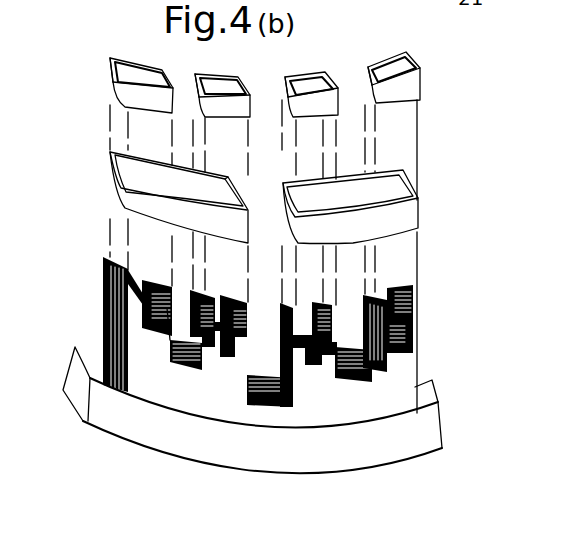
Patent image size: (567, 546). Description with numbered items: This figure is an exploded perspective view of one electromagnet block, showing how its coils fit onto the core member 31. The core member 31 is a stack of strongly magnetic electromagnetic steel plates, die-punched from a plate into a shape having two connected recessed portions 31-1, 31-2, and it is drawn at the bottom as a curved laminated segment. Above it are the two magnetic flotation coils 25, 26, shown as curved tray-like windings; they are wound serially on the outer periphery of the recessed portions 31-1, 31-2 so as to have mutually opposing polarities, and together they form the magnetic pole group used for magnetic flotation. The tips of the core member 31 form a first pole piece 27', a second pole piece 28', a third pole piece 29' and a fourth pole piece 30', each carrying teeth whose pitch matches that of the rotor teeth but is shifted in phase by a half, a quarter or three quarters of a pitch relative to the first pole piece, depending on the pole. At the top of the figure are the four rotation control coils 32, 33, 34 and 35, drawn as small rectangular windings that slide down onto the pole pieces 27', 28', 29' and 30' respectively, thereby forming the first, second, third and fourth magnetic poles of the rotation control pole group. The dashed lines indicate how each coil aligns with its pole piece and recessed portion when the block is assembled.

The magnetic flotation coil 25 is at (117, 192).
The magnetic flotation coil 26 is at (416, 210).
The first pole piece 27' is at (122, 324).
The second pole piece 28' is at (234, 407).
The third pole piece 29' is at (326, 418).
The fourth pole piece 30' is at (434, 256).
The core member 31 is at (264, 425).
The recessed portion 31-1 is at (180, 382).
The recessed portion 31-2 is at (366, 393).
The rotation control coil 32 is at (117, 80).
The rotation control coil 33 is at (200, 102).
The rotation control coil 34 is at (291, 102).
The rotation control coil 35 is at (369, 90).